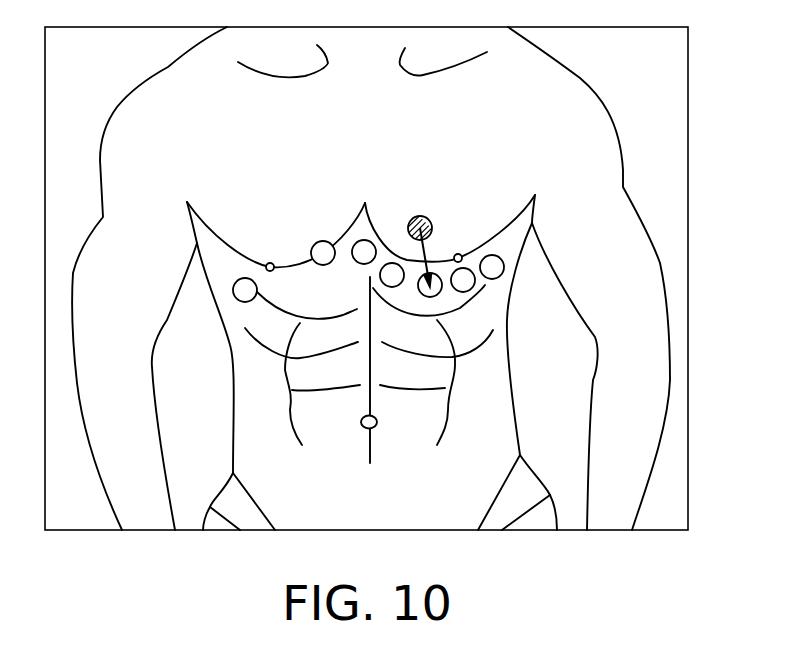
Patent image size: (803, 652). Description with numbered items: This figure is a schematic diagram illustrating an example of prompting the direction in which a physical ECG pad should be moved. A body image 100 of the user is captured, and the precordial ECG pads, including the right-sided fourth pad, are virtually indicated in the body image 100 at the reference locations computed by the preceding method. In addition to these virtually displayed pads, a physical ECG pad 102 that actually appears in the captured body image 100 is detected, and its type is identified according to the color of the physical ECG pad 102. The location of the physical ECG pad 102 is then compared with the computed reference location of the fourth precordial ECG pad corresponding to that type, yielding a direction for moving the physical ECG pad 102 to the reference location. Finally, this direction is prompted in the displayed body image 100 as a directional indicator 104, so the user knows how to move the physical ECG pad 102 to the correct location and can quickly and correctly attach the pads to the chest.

The body image 100 is at (623, 185).
The physical ECG pad 102 is at (424, 217).
The directional indicator 104 is at (428, 254).